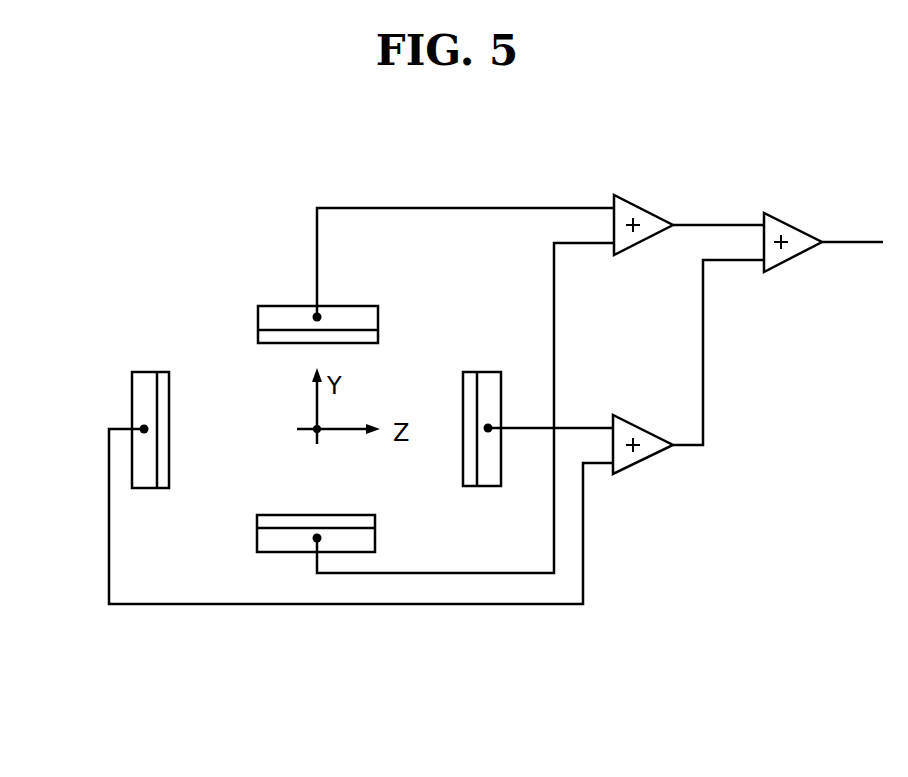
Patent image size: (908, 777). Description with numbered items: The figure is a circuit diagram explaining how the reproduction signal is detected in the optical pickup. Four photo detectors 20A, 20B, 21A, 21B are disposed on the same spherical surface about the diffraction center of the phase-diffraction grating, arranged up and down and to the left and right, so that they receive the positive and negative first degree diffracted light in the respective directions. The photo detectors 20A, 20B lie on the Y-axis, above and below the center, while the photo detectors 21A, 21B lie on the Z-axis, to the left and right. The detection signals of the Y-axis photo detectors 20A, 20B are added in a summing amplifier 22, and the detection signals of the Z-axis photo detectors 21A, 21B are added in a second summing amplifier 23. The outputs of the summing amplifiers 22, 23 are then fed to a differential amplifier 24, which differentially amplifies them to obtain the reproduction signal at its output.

The photo detector 20A is at (284, 306).
The photo detector 20B is at (257, 542).
The photo detector 21A is at (132, 395).
The photo detector 21B is at (490, 487).
The summing amplifier 22 is at (650, 237).
The summing amplifier 23 is at (650, 457).
The differential amplifier 24 is at (800, 255).